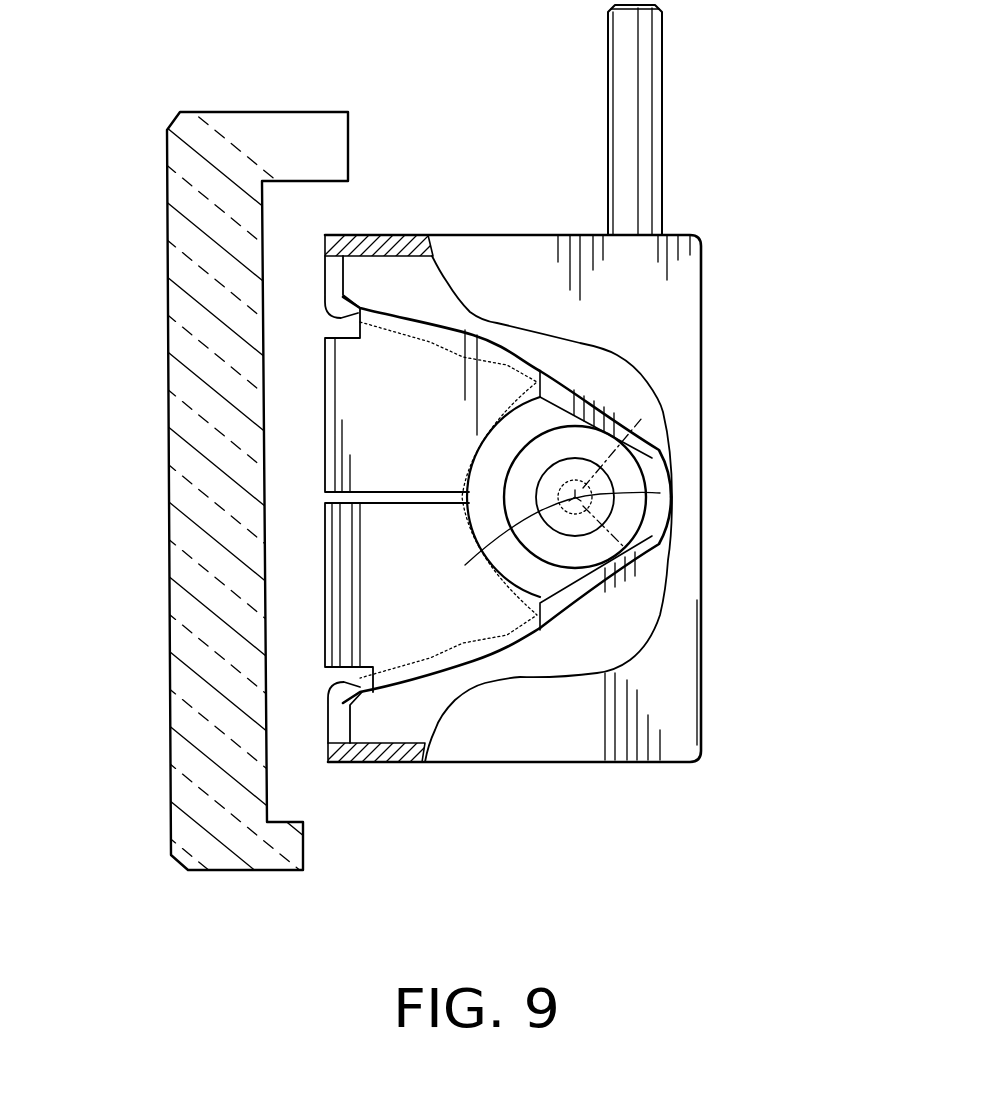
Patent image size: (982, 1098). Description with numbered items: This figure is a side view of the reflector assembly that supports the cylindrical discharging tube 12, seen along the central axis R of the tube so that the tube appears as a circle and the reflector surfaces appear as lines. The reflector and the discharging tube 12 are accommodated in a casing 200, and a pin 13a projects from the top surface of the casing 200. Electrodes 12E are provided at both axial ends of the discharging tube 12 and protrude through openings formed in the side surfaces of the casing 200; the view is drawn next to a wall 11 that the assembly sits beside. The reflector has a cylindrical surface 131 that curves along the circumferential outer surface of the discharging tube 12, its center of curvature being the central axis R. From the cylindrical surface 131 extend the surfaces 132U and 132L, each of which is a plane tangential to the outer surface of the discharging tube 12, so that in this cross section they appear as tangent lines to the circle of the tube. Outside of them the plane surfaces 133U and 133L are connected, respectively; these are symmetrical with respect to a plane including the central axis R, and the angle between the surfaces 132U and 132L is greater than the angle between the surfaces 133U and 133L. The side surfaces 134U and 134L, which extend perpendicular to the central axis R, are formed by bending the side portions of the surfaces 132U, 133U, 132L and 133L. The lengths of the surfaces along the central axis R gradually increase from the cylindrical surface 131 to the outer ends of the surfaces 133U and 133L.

The mounting wall 11 is at (168, 300).
The pin 13a is at (648, 108).
The casing 200 is at (508, 247).
The cylindrical surface 131 is at (661, 454).
The upper tangential surface 132U is at (575, 377).
The lower tangential surface 132L is at (600, 593).
The upper plane surface 133U is at (399, 306).
The lower plane surface 133L is at (443, 680).
The upper side surface 134U is at (437, 362).
The lower side surface 134L is at (450, 590).
The discharging tube 12 is at (510, 460).
The electrode 12E is at (660, 493).
The central axis R is at (467, 540).